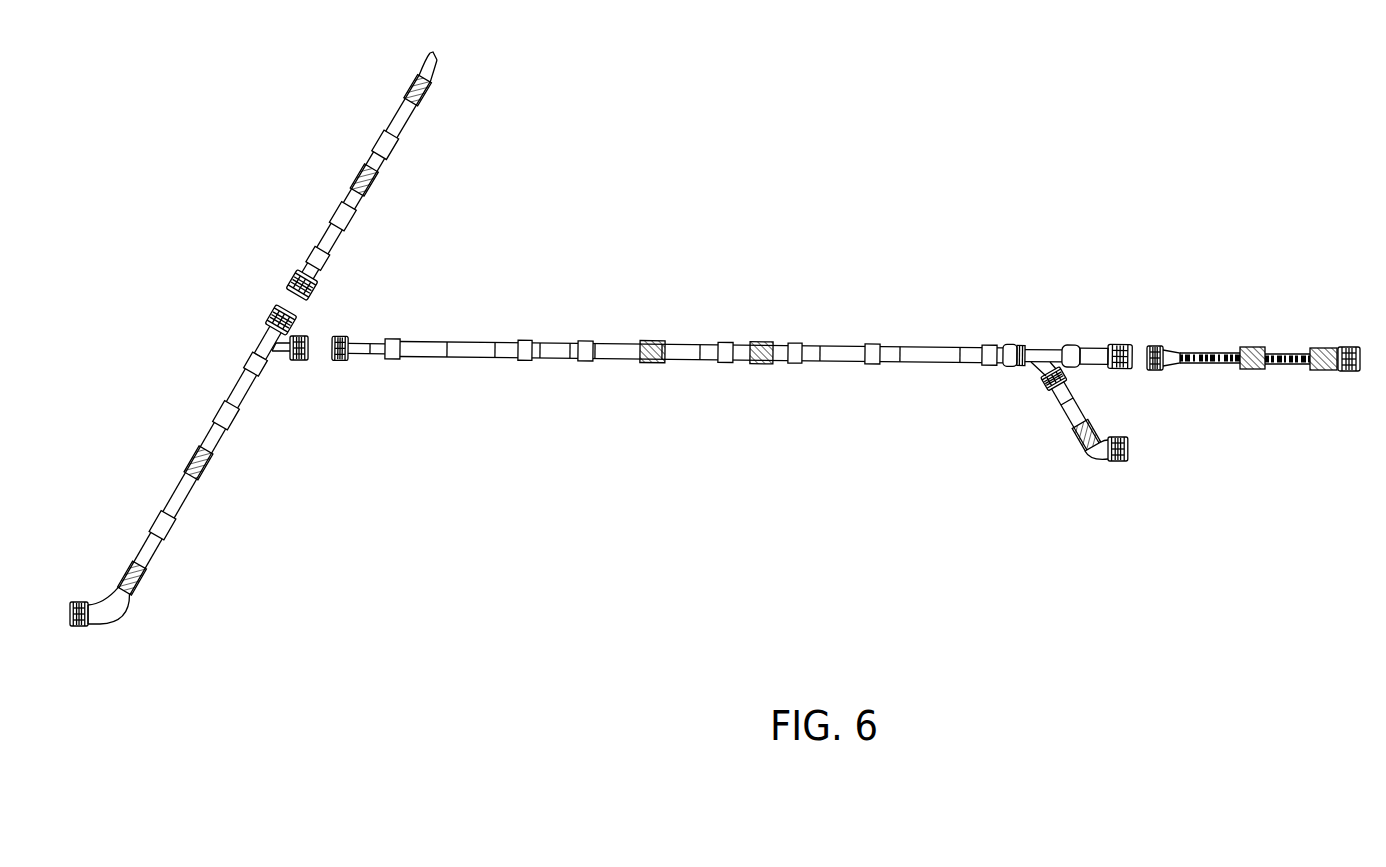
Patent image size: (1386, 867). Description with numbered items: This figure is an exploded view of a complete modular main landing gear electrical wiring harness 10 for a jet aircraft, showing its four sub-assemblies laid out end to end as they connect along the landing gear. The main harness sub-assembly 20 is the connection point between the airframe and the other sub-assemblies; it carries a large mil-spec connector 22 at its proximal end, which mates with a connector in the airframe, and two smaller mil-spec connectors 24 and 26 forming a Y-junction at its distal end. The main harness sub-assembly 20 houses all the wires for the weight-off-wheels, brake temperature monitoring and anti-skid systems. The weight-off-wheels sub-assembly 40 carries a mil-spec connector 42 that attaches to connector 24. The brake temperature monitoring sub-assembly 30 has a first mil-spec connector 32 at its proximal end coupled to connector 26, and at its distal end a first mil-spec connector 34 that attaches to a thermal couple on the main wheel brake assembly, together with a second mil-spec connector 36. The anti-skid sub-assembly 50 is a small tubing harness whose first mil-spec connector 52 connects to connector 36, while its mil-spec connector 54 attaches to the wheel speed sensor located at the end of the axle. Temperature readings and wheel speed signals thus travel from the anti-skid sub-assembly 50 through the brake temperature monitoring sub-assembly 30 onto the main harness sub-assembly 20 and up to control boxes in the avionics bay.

The modular main landing gear electrical wiring harness 10 is at (973, 288).
The main harness sub-assembly 20 is at (185, 502).
The large mil-spec connector 22 is at (73, 602).
The mil-spec connector 24 is at (276, 318).
The mil-spec connector 26 is at (297, 362).
The brake temperature monitoring sub-assembly 30 is at (727, 386).
The first mil-spec connector 32 is at (361, 324).
The first mil-spec connector 34 is at (1126, 459).
The second mil-spec connector 36 is at (1102, 328).
The weight-off-wheels sub-assembly 40 is at (351, 212).
The mil-spec connector 42 is at (295, 276).
The anti-skid sub-assembly 50 is at (1282, 352).
The first mil-spec connector 52 is at (1150, 345).
The mil-spec connector 54 is at (1350, 374).